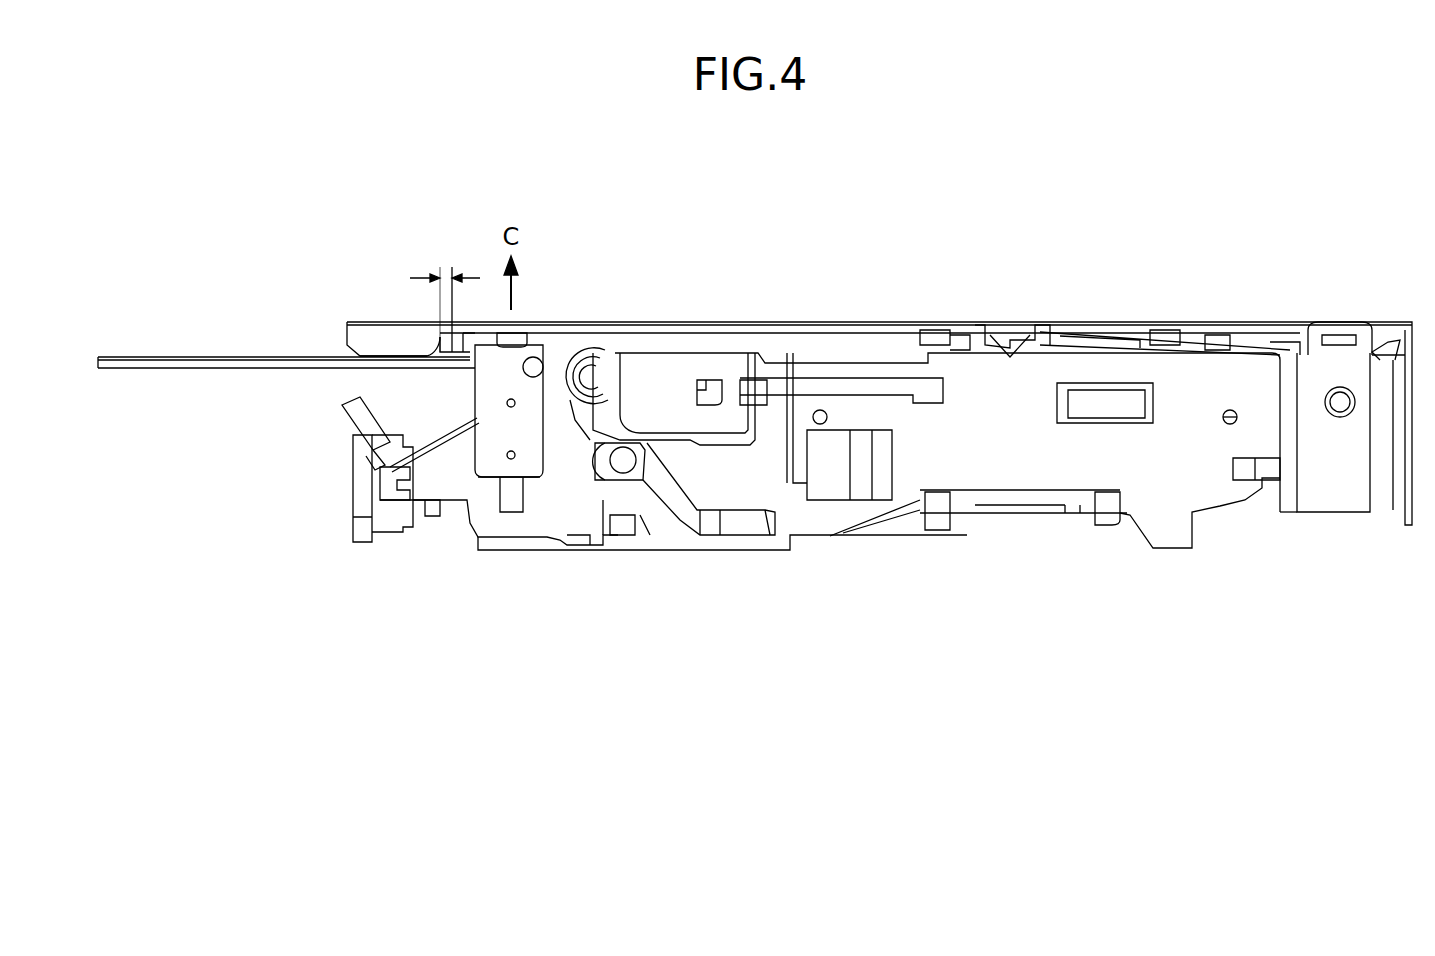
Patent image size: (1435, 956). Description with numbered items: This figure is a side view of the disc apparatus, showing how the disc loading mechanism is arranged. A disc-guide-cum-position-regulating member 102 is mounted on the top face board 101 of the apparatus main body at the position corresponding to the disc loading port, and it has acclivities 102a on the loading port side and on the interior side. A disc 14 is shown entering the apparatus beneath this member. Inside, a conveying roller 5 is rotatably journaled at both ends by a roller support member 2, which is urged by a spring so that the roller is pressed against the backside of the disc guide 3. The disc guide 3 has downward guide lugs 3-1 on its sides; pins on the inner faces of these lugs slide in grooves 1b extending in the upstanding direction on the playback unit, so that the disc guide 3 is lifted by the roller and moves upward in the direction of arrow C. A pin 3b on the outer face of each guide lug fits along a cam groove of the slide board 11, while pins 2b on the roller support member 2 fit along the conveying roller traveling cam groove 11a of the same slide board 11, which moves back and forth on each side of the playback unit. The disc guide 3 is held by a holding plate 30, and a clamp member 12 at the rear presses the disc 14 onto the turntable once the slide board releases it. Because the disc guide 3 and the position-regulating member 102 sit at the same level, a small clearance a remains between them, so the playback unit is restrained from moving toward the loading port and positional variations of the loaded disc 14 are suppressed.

The clearance a is at (443, 268).
The roller support member 2 is at (437, 513).
The groove 1b is at (510, 512).
The pin 2b is at (620, 475).
The disc guide 3 is at (443, 365).
The pin 3b is at (540, 357).
The downward guide lug 3-1 is at (530, 470).
The conveying roller 5 is at (580, 375).
The slide board 11 is at (1025, 475).
The conveying roller traveling cam groove 11a is at (660, 470).
The clamp member 12 is at (1158, 338).
The disc 14 is at (150, 357).
The holding plate 30 is at (437, 326).
The top face board 101 is at (838, 322).
The disc-guide-cum-position-regulating member 102 is at (366, 332).
The acclivity 102a is at (350, 350).